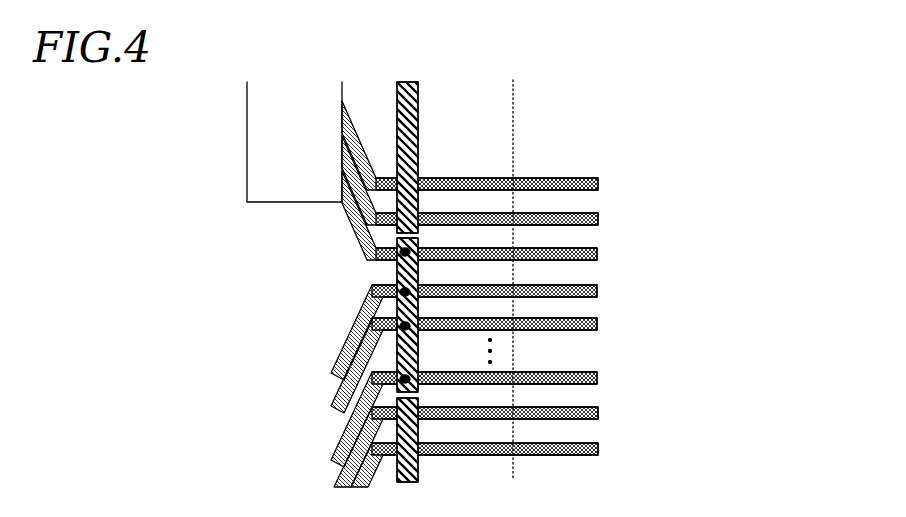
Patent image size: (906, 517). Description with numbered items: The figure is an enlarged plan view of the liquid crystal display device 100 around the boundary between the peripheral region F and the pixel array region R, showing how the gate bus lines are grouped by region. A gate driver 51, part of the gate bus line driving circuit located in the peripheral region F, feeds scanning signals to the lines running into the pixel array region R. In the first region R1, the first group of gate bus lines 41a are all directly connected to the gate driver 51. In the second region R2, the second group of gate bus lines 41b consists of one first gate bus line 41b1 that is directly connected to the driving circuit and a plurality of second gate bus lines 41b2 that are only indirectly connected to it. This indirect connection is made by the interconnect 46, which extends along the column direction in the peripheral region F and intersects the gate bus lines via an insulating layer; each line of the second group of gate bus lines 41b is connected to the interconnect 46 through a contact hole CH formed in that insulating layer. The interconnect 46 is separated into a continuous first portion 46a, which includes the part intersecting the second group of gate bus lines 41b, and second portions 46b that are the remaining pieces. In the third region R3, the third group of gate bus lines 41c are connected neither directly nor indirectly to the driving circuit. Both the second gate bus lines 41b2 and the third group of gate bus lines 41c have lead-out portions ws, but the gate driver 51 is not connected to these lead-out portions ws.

The liquid crystal display device 100 is at (724, 86).
The gate driver 51 is at (247, 158).
The first group of gate bus lines 41a is at (598, 184).
The second group of gate bus lines 41b is at (516, 319).
The first gate bus line 41b1 is at (597, 254).
The second gate bus lines 41b2 is at (597, 291).
The third group of gate bus lines 41c is at (598, 413).
The interconnect 46 is at (406, 282).
The first portion 46a is at (426, 240).
The second portions 46b is at (426, 82).
The contact hole CH is at (372, 252).
The lead-out portion ws is at (340, 351).
The first region R1 is at (654, 82).
The second region R2 is at (717, 237).
The third region R3 is at (654, 397).
The peripheral region F is at (470, 117).
The pixel array region R is at (568, 117).